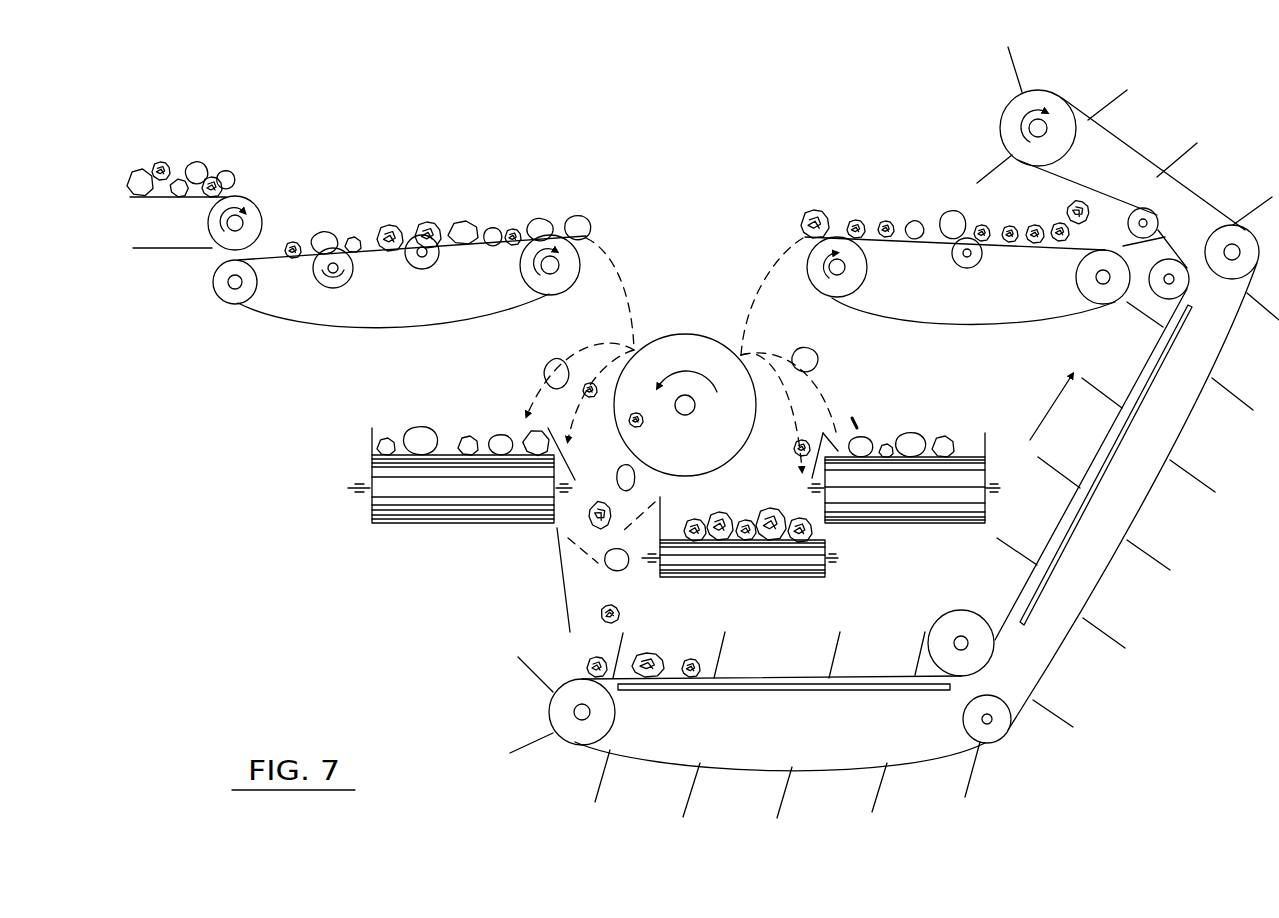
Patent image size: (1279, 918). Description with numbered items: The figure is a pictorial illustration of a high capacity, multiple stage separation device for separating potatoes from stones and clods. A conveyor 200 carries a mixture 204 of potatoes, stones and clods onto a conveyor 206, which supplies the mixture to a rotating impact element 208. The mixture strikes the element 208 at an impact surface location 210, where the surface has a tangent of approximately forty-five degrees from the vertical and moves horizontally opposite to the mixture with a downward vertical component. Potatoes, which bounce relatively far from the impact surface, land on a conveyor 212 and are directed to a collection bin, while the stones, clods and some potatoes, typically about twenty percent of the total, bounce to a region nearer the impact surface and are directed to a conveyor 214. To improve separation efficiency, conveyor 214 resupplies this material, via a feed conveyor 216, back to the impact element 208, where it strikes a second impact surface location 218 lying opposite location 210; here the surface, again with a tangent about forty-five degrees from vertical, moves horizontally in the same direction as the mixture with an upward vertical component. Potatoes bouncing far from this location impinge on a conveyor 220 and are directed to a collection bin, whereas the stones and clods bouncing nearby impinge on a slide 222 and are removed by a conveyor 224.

The conveyor 200 is at (250, 200).
The mixture 204 is at (165, 160).
The conveyor 206 is at (283, 320).
The rotating impact element 208 is at (710, 338).
The impact surface location 210 is at (634, 348).
The conveyor 212 is at (372, 445).
The conveyor 214 is at (548, 705).
The feed conveyor 216 is at (953, 325).
The impact surface location 218 is at (741, 352).
The conveyor 220 is at (972, 467).
The slide 222 is at (828, 442).
The conveyor 224 is at (772, 567).